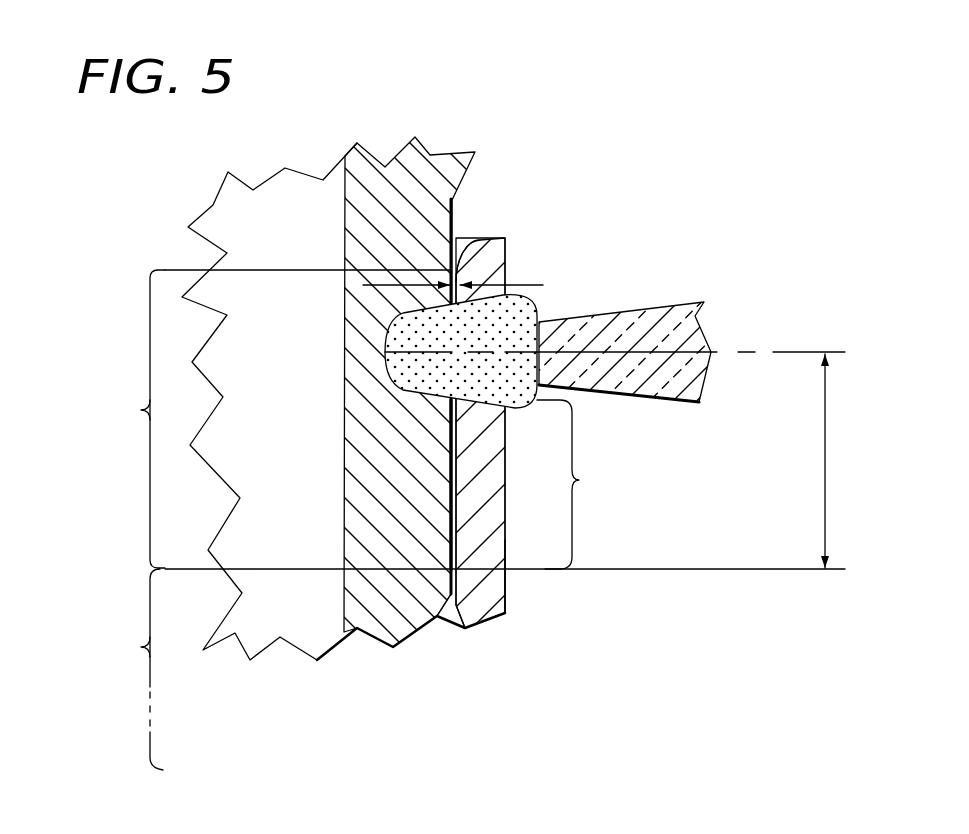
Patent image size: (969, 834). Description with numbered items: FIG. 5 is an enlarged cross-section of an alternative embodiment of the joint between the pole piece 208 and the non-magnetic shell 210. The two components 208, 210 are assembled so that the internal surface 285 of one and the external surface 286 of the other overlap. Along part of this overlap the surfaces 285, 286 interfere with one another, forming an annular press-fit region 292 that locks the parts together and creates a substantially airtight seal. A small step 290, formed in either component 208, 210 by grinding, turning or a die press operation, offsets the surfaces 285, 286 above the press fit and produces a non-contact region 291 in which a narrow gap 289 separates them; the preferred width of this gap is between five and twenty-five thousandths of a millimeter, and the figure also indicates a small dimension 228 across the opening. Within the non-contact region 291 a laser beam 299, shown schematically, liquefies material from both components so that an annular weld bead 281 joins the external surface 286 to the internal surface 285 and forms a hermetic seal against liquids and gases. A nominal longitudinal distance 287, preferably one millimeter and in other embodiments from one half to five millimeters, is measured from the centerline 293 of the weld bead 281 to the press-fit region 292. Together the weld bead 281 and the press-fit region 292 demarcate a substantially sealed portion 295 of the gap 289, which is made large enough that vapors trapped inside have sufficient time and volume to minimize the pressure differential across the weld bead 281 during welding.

The pole piece 208 is at (430, 155).
The non-magnetic shell 210 is at (500, 240).
The gap 228 is at (518, 283).
The weld bead 281 is at (523, 315).
The internal surface 285 is at (445, 620).
The external surface 286 is at (457, 593).
The longitudinal distance 287 is at (827, 447).
The gap 289 is at (447, 465).
The step 290 is at (393, 647).
The non-contact region 291 is at (141, 410).
The press-fit region 292 is at (141, 647).
The centerline 293 is at (803, 352).
The sealed portion 295 is at (579, 480).
The laser beam 299 is at (680, 308).